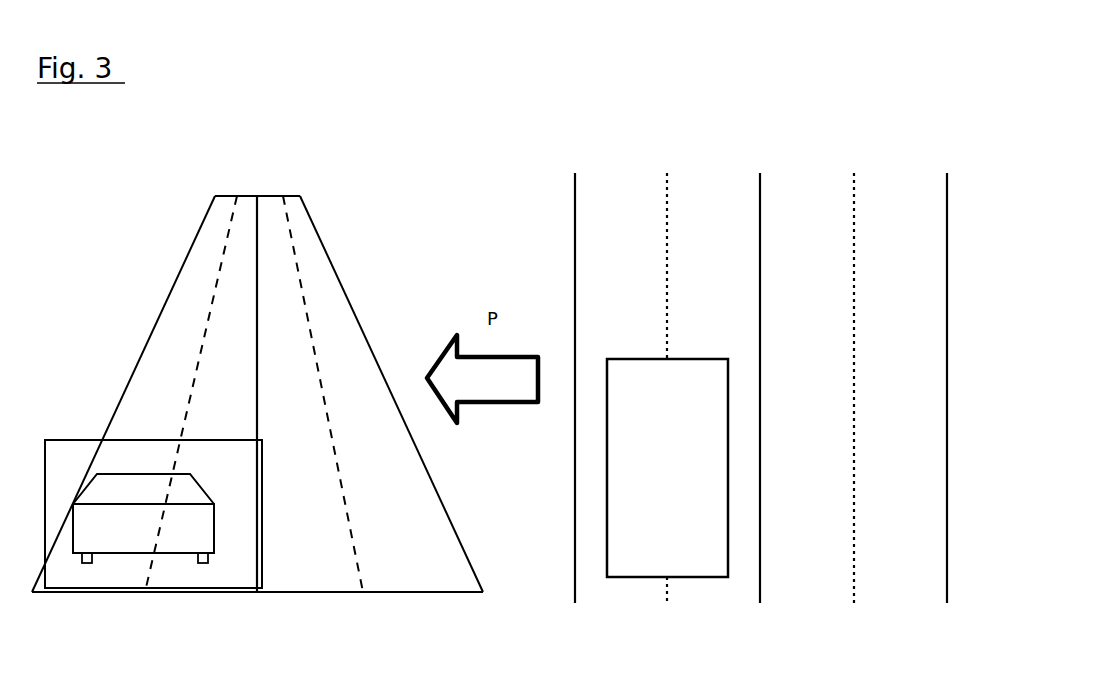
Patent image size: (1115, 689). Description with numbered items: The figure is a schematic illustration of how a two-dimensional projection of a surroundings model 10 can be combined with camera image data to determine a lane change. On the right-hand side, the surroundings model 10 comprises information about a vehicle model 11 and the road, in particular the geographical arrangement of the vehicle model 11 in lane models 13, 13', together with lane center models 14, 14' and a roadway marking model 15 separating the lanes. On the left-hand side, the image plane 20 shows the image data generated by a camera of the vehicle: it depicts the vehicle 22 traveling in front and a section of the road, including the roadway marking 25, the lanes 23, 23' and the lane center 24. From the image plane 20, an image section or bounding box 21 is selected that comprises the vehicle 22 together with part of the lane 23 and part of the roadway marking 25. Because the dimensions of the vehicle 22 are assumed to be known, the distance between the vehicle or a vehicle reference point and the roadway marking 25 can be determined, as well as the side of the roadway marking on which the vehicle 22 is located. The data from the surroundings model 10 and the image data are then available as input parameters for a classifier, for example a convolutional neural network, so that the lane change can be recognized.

The surroundings model 10 is at (603, 148).
The vehicle model 11 is at (667, 468).
The lane model 13 is at (706, 102).
The lane model 13' is at (840, 106).
The lane center model 14 is at (646, 319).
The lane center model 14' is at (877, 310).
The roadway marking model 15 is at (760, 173).
The image plane 20 is at (376, 243).
The bounding box 21 is at (155, 440).
The vehicle 22 is at (217, 530).
The lane 23 is at (132, 331).
The lane 23' is at (383, 346).
The lane center 24 is at (202, 352).
The roadway marking 25 is at (258, 195).